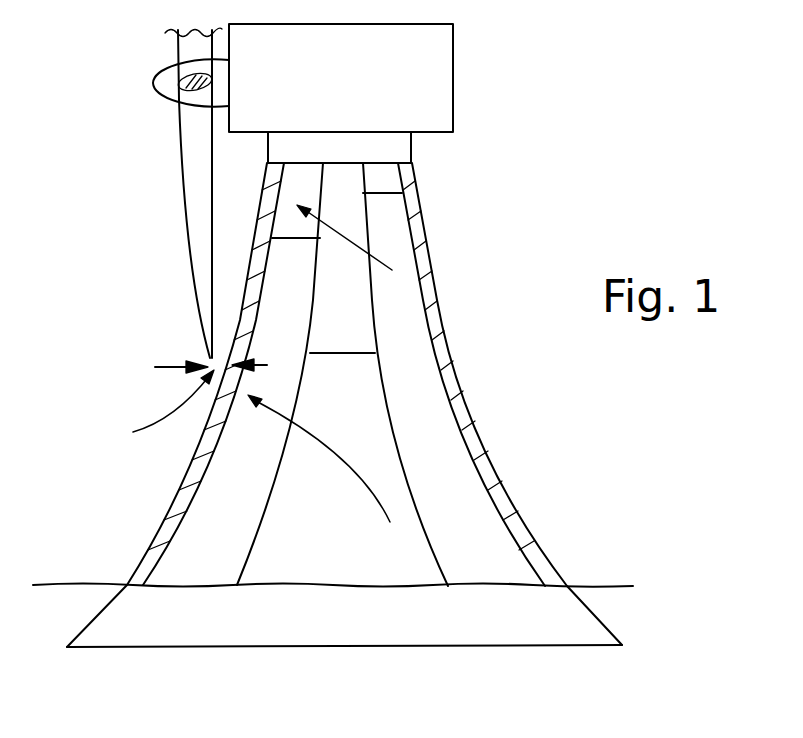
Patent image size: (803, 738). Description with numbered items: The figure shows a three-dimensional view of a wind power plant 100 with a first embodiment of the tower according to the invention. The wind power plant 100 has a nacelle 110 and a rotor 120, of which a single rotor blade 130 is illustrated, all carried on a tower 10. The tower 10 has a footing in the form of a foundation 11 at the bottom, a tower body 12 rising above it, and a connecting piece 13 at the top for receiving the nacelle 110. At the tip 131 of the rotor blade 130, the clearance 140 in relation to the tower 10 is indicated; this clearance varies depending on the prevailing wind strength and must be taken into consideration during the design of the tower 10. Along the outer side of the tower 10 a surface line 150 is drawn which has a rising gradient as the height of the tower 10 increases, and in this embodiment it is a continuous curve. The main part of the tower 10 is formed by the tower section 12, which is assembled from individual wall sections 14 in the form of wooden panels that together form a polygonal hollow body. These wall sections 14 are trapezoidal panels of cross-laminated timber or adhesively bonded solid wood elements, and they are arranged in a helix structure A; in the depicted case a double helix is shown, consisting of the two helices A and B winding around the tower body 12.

The wind power plant 100 is at (593, 177).
The nacelle 110 is at (363, 91).
The rotor 120 is at (116, 124).
The rotor blade 130 is at (193, 207).
The tip 131 is at (203, 353).
The clearance 140 is at (149, 415).
The surface line 150 is at (467, 388).
The tower 10 is at (504, 357).
The foundation 11 is at (470, 647).
The tower body 12 is at (480, 443).
The connecting piece 13 is at (412, 152).
The wall section 14 is at (298, 185).
The helix structure A is at (375, 497).
The helix B is at (368, 245).